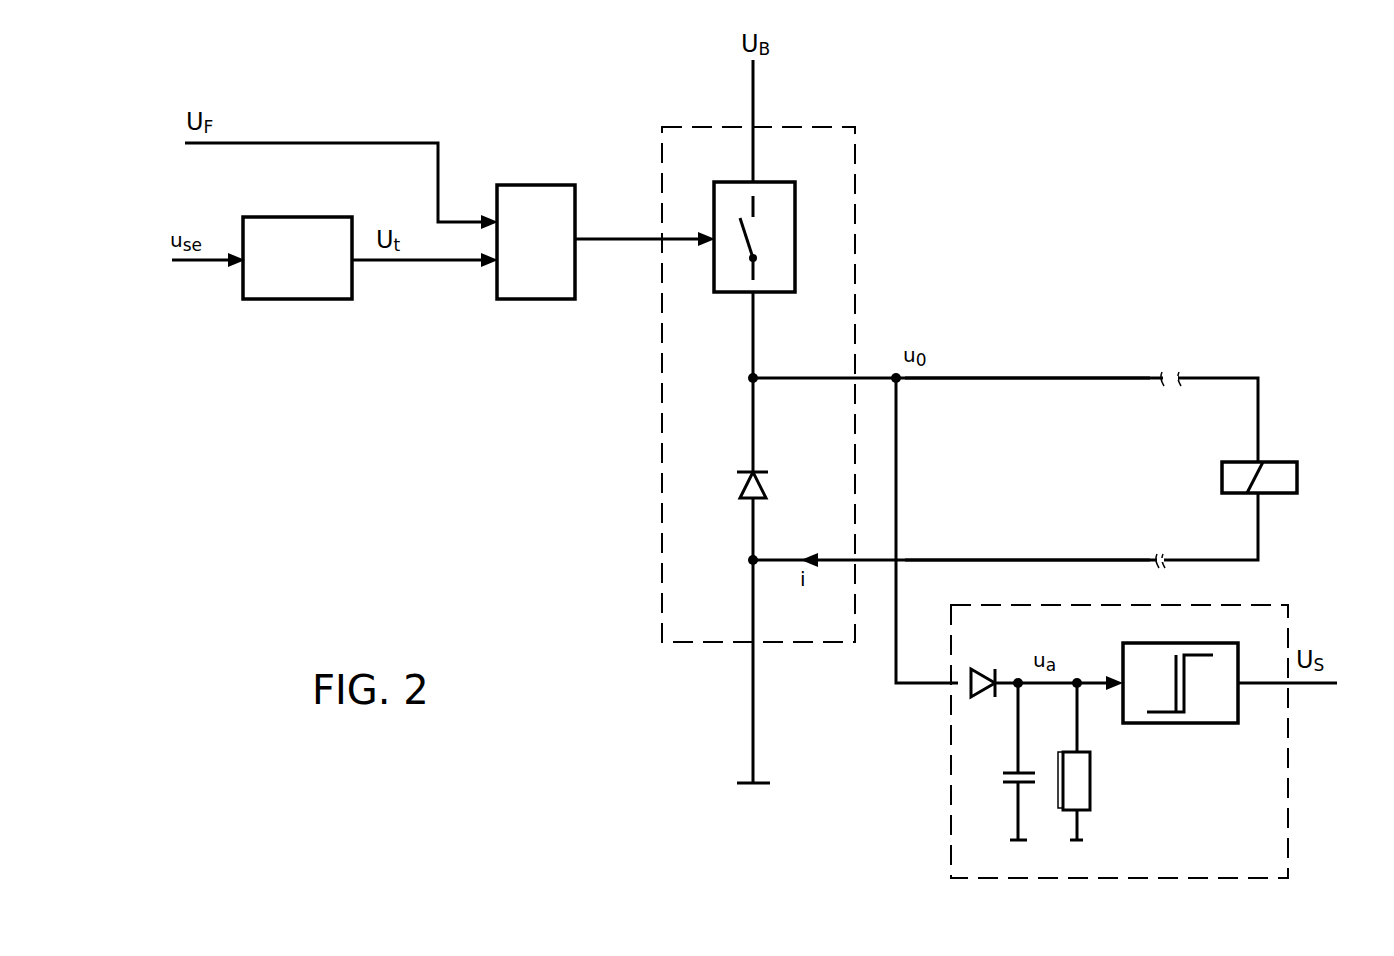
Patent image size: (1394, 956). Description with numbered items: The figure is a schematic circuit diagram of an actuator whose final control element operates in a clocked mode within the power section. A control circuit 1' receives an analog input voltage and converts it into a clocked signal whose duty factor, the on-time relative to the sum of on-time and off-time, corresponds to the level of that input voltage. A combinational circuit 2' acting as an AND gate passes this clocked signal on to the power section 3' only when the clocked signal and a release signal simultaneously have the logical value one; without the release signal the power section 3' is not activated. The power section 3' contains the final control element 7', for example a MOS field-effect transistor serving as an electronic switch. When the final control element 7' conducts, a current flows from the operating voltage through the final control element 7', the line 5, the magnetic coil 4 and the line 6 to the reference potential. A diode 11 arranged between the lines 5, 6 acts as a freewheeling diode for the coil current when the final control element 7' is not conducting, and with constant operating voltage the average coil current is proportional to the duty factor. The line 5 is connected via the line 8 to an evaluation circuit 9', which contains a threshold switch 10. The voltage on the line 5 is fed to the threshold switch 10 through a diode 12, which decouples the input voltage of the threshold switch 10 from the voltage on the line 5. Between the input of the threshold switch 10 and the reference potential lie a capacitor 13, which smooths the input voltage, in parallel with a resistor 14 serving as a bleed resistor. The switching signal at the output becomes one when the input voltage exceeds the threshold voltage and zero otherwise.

The control circuit 1' is at (297, 293).
The combinational circuit 2' is at (536, 277).
The power section 3' is at (805, 384).
The magnetic coil 4 is at (1275, 462).
The line 5 is at (1063, 378).
The line 6 is at (1062, 560).
The final control element 7' is at (774, 216).
The line 8 is at (896, 462).
The evaluation circuit 9' is at (1150, 741).
The threshold switch 10 is at (1185, 723).
The diode 11 is at (747, 503).
The diode 12 is at (962, 670).
The capacitor 13 is at (1012, 783).
The resistor 14 is at (1092, 790).